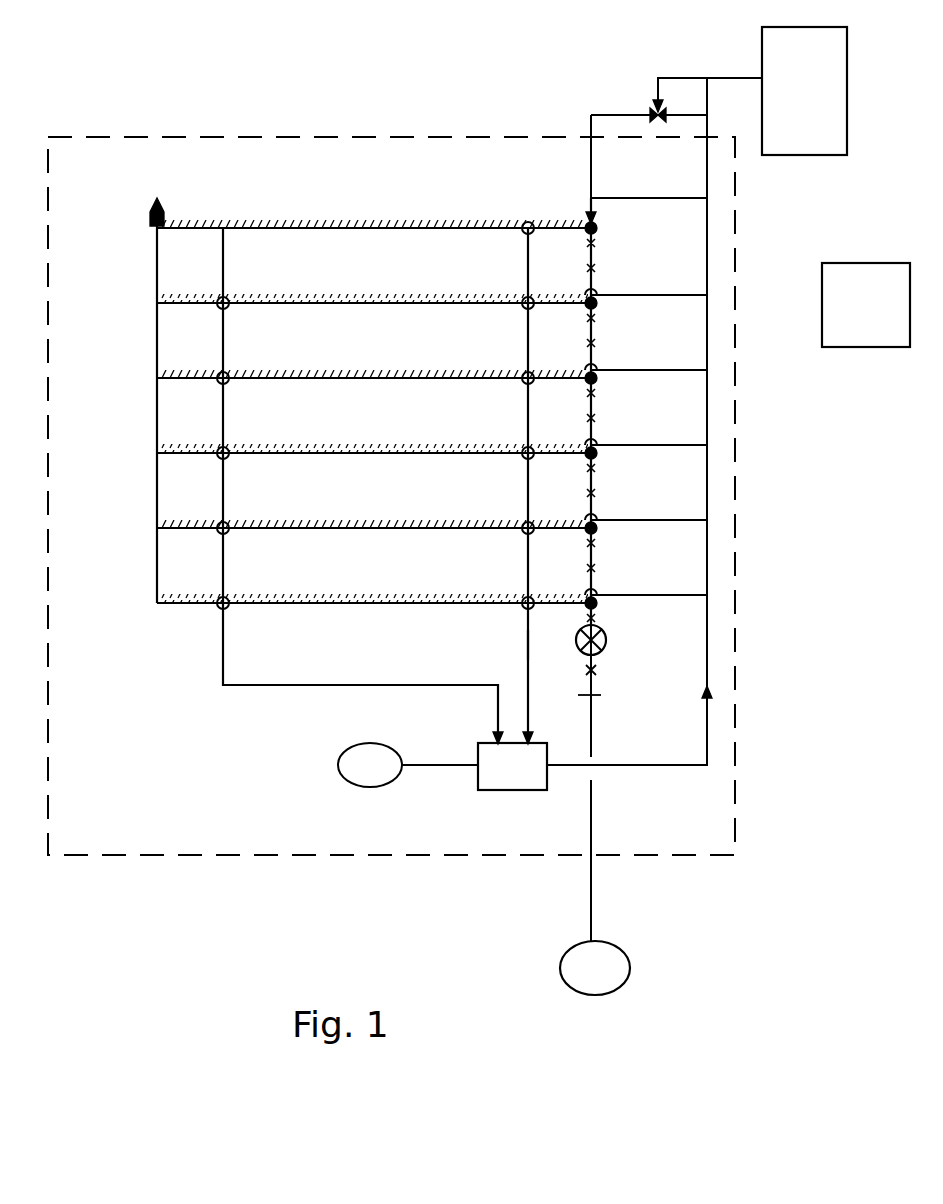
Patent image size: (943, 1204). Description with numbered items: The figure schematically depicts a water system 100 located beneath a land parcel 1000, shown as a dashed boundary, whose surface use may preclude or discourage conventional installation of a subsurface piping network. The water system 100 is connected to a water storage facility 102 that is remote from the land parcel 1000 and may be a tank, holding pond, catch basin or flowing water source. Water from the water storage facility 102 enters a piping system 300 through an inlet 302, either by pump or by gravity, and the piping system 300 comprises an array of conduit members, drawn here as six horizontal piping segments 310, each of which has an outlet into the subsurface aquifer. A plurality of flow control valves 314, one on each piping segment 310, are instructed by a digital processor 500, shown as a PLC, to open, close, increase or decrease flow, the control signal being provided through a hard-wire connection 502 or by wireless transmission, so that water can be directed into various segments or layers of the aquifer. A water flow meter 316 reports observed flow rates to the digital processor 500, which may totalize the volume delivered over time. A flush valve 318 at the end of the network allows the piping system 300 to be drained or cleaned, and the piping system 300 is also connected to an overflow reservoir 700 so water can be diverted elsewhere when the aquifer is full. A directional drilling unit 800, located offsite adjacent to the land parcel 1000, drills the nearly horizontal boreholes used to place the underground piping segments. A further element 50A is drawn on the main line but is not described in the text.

The land parcel 1000 is at (68, 125).
The water system 100 is at (172, 657).
The piping segments 310 is at (650, 106).
The flush valve 318 is at (166, 214).
The piping system 300 is at (531, 216).
The flow control valves 314 is at (596, 232).
The water flow meter 316 is at (576, 640).
The inlet 302 is at (600, 690).
The sensor 50A is at (526, 648).
The digital processor 500 is at (510, 792).
The hard-wire connection 502 is at (696, 750).
The overflow reservoir 700 is at (823, 97).
The directional drilling unit 800 is at (885, 328).
The water storage facility 102 is at (643, 972).